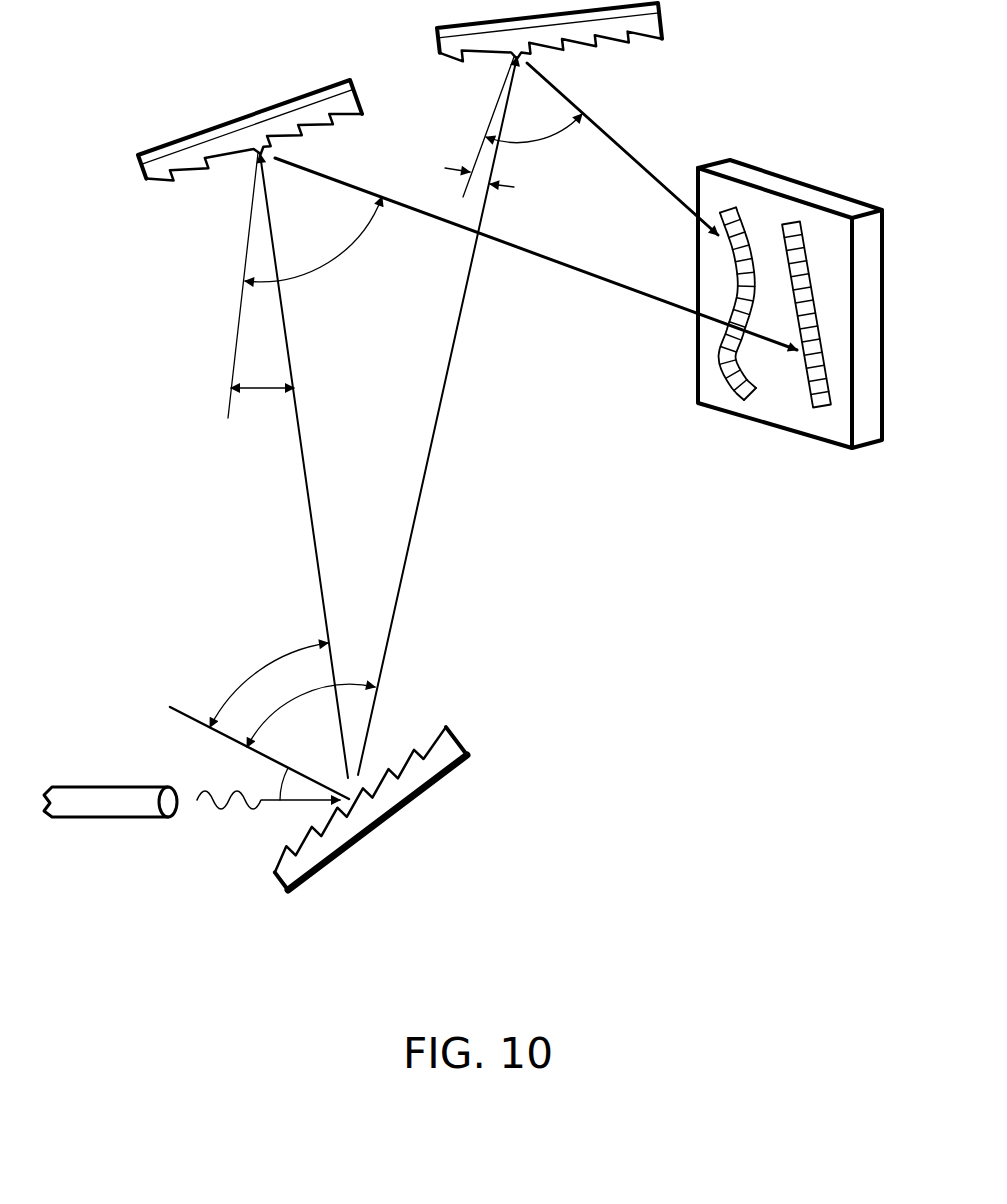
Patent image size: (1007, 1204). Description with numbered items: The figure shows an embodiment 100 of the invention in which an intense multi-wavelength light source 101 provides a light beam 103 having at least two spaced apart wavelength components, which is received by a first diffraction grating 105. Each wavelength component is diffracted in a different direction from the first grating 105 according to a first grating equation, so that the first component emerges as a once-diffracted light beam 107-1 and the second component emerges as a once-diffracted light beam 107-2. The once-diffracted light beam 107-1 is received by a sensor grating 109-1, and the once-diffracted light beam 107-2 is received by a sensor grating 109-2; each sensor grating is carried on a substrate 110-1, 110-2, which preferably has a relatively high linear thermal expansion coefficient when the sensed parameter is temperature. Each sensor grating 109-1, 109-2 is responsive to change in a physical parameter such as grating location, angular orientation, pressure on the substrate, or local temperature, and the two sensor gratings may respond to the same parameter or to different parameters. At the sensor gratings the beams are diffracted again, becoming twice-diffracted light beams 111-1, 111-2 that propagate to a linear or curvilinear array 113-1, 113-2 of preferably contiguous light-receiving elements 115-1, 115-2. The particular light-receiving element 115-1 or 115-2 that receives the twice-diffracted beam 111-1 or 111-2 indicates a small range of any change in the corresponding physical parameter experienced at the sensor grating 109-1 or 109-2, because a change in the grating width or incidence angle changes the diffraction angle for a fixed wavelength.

The embodiment 100 is at (722, 775).
The multi-wavelength light source 101 is at (118, 820).
The light beam 103 is at (255, 810).
The first diffraction grating 105 is at (395, 812).
The once-diffracted light beam 107-1 is at (306, 492).
The once-diffracted light beam 107-2 is at (426, 488).
The sensor grating 109-1 is at (173, 172).
The sensor grating 109-2 is at (630, 42).
The substrate 110-1 is at (217, 249).
The substrate 110-2 is at (616, 112).
The twice-diffracted light beam 111-1 is at (585, 272).
The twice-diffracted light beam 111-2 is at (636, 155).
The array of light-receiving elements 113-1 is at (708, 388).
The array of light-receiving elements 113-2 is at (668, 361).
The light-receiving element 115-1 is at (803, 358).
The light-receiving element 115-2 is at (723, 238).